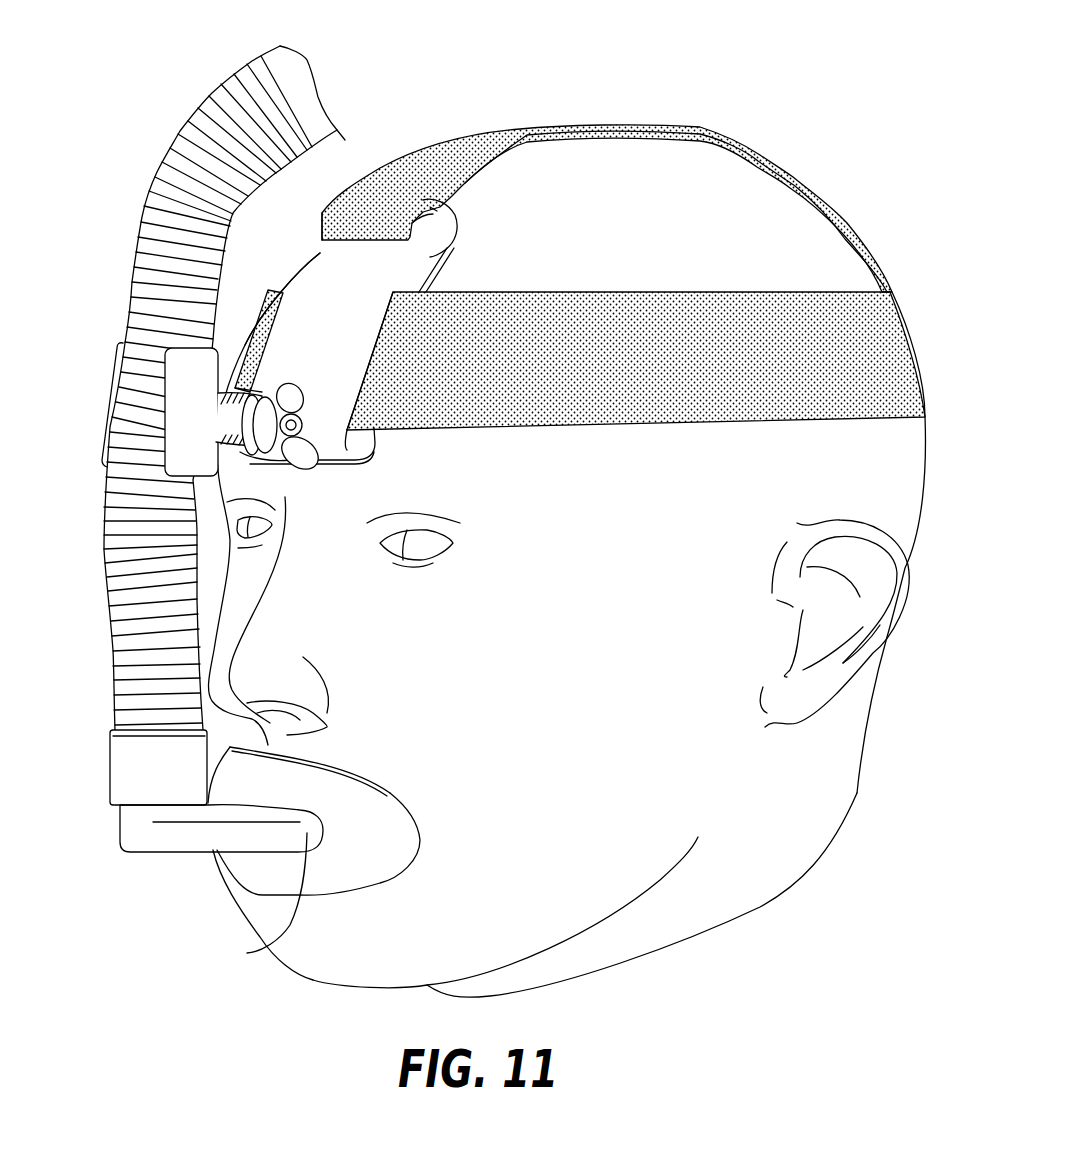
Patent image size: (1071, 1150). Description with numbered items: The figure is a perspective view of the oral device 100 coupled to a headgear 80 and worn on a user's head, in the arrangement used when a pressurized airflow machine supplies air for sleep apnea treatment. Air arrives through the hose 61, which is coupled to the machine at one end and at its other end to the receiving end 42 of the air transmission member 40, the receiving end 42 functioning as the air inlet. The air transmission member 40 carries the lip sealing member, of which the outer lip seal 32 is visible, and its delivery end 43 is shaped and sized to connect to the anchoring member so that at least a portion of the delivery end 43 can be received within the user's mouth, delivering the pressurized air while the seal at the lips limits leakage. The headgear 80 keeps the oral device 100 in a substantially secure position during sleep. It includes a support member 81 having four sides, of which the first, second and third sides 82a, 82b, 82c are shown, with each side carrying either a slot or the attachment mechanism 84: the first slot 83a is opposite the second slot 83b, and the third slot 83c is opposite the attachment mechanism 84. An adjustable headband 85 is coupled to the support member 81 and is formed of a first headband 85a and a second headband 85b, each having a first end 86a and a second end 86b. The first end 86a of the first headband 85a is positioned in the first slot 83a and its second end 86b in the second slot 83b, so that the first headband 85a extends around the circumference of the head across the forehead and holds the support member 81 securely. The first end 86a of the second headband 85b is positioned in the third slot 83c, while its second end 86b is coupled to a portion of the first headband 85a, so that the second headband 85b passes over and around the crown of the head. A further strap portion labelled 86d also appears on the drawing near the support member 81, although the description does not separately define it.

The oral device 100 is at (580, 48).
The headgear 80 is at (778, 142).
The adjustable headband 85 is at (619, 188).
The first headband 85a is at (668, 327).
The second headband 85b is at (513, 137).
The first end 86a is at (322, 212).
The second end 86b is at (890, 290).
The strap end 86d is at (349, 455).
The support member 81 is at (320, 253).
The first side 82a is at (300, 253).
The second side 82b is at (440, 268).
The third side 82c is at (432, 208).
The first slot 83a is at (270, 338).
The second slot 83b is at (393, 340).
The third slot 83c is at (430, 237).
The attachment mechanism 84 is at (270, 427).
The hose 61 is at (103, 528).
The receiving end 42 is at (110, 763).
The air transmission member 40 is at (183, 852).
The outer lip seal 32 is at (250, 868).
The delivery end 43 is at (260, 947).